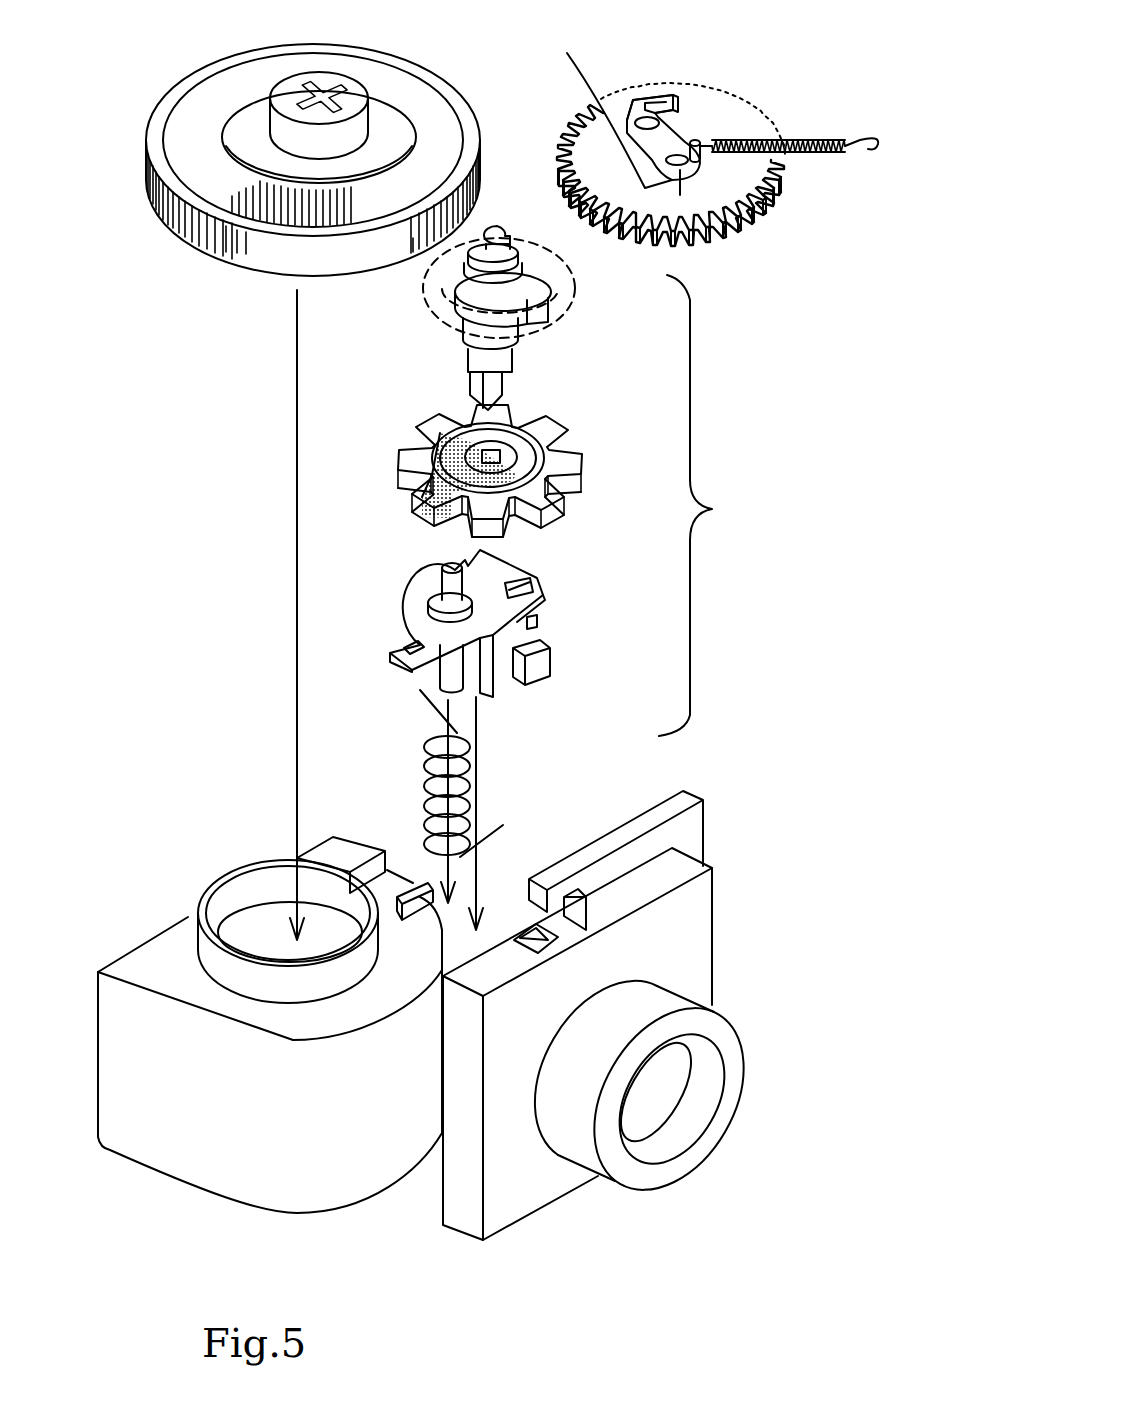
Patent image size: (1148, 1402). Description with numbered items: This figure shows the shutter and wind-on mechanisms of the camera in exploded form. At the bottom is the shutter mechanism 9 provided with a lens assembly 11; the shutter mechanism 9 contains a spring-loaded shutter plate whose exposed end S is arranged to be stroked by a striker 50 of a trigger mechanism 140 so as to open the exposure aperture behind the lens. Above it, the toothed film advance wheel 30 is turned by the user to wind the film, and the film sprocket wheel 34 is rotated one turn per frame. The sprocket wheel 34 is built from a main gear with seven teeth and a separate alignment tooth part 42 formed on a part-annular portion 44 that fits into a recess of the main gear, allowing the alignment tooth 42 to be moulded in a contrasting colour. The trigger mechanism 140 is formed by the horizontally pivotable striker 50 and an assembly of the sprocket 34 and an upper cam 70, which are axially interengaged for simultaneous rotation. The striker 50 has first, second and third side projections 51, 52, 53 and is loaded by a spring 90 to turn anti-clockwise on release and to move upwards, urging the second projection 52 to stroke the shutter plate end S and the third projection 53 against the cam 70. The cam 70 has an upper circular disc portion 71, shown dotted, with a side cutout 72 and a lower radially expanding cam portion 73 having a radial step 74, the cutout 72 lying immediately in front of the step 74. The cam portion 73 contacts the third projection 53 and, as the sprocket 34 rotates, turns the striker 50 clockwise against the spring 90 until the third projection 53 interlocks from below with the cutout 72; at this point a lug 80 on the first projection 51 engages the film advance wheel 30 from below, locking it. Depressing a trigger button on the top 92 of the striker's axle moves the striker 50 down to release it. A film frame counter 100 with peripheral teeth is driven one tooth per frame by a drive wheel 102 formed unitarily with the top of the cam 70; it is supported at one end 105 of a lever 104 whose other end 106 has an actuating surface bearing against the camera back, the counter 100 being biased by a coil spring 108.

The shutter mechanism 9 is at (639, 1015).
The lens assembly 11 is at (666, 1005).
The film advance wheel 30 is at (247, 247).
The film sprocket wheel 34 is at (501, 492).
The alignment tooth part 42 is at (432, 518).
The part-annular portion 44 is at (417, 487).
The striker 50 is at (505, 636).
The first side projection 51 is at (375, 672).
The second side projection 52 is at (538, 675).
The third side projection 53 is at (482, 546).
The upper cam 70 is at (527, 293).
The upper circular disc portion 71 is at (562, 258).
The side cutout 72 is at (527, 310).
The lower radially expanding cam portion 73 is at (463, 337).
The radial step 74 is at (532, 325).
The lug 80 is at (405, 645).
The spring 90 is at (417, 790).
The top of the striker's axle 92 is at (432, 578).
The film frame counter 100 is at (735, 215).
The drive wheel 102 is at (497, 226).
The lever 104 is at (714, 94).
The lever end 105 is at (688, 237).
The lever other end 106 is at (668, 92).
The coil spring 108 is at (830, 137).
The trigger mechanism 140 is at (723, 505).
The exposed end of shutter plate S is at (512, 958).